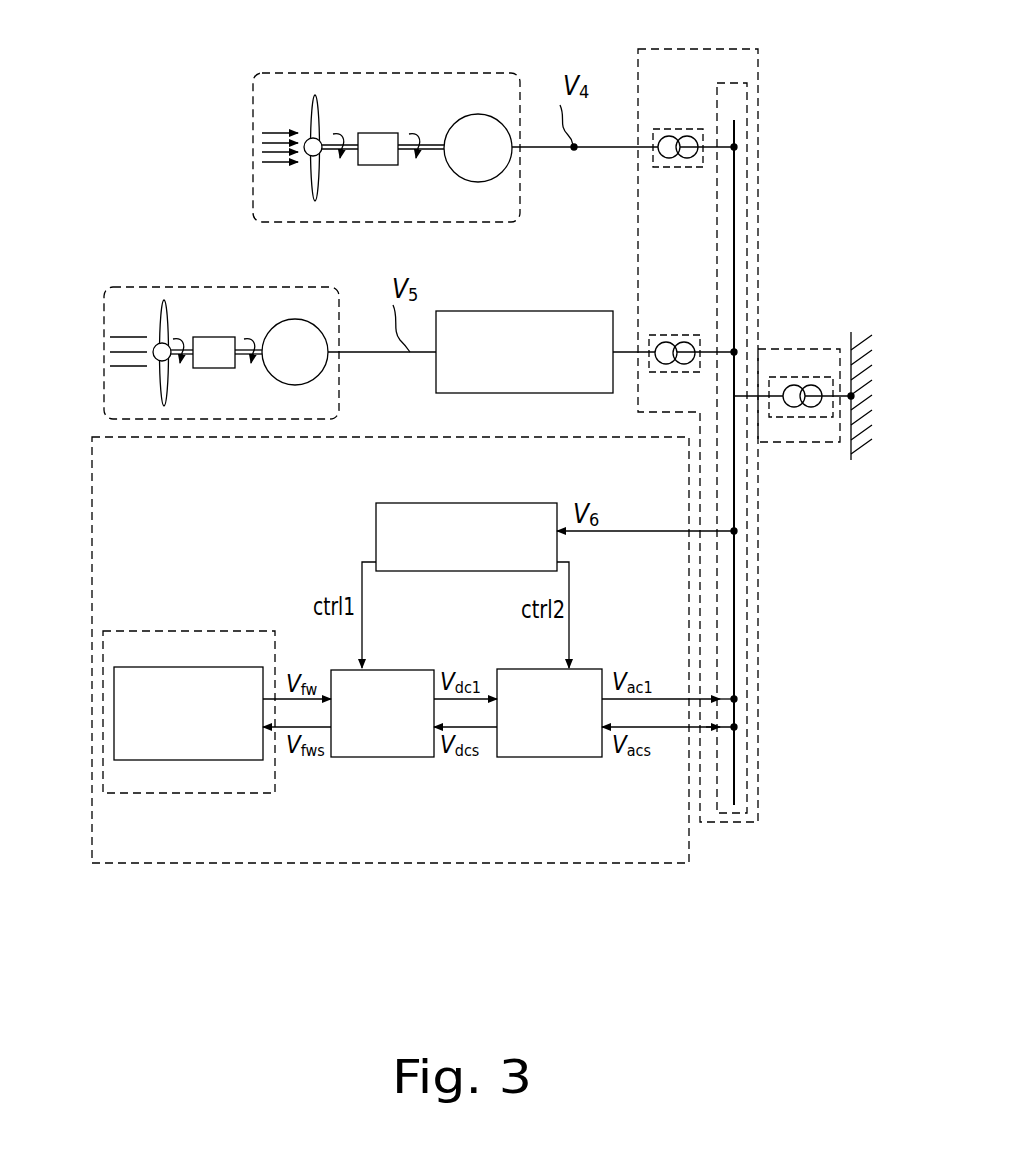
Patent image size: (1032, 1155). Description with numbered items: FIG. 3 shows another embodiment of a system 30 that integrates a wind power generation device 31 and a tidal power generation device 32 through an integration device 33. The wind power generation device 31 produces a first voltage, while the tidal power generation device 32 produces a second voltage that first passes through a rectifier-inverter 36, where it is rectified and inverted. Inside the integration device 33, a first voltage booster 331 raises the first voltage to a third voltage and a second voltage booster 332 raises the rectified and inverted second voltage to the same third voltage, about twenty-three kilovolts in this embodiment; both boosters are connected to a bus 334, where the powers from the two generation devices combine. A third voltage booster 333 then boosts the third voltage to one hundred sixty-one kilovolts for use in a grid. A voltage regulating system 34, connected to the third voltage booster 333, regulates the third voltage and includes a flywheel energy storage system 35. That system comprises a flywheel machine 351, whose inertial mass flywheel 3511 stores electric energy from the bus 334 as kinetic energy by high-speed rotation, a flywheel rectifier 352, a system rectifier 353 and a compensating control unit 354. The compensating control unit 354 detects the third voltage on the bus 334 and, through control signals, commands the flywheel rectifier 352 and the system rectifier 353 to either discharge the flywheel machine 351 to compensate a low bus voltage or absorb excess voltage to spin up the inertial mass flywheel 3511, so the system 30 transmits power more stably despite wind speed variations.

The system 30 is at (693, 999).
The wind power generation device 31 is at (253, 112).
The tidal power generation device 32 is at (127, 287).
The integration device 33 is at (697, 48).
The first voltage booster 331 is at (683, 129).
The second voltage booster 332 is at (676, 335).
The third voltage booster 333 is at (797, 417).
The bus 334 is at (717, 189).
The voltage regulating system 34 is at (92, 513).
The flywheel energy storage system 35 is at (196, 440).
The flywheel machine 351 is at (189, 746).
The inertial mass flywheel 3511 is at (243, 760).
The flywheel rectifier 352 is at (383, 757).
The system rectifier 353 is at (533, 757).
The compensating control unit 354 is at (520, 503).
The rectifier-inverter 36 is at (530, 311).